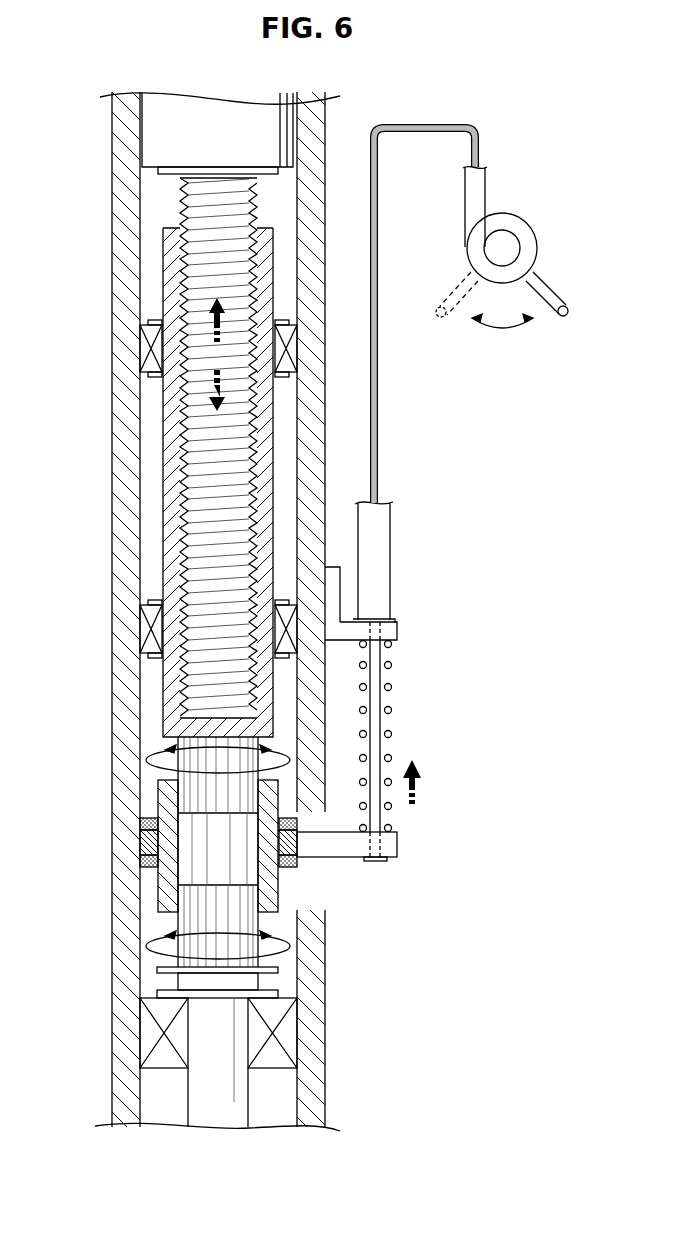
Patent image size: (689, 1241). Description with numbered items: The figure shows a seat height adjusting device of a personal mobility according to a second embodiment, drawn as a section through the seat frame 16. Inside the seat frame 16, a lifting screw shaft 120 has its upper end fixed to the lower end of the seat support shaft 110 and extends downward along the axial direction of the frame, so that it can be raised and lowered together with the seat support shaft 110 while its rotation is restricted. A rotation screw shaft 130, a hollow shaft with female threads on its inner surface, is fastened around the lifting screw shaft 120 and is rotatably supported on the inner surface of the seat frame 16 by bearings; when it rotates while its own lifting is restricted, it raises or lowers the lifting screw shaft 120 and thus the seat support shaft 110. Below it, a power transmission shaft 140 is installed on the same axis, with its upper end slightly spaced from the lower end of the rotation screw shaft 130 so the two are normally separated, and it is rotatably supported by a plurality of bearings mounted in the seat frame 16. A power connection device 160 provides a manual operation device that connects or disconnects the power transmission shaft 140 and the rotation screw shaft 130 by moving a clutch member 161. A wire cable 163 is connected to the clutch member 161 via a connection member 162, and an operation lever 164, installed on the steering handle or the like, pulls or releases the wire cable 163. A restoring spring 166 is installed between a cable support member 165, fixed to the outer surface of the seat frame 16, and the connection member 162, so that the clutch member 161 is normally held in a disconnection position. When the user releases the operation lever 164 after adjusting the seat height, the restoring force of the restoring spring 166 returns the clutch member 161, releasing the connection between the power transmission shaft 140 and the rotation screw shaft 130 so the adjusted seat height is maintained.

The seat frame 16 is at (120, 500).
The seat support shaft 110 is at (168, 142).
The lifting screw shaft 120 is at (210, 273).
The rotation screw shaft 130 is at (172, 420).
The power transmission shaft 140 is at (227, 1092).
The power connection device 160 is at (432, 521).
The clutch member 161 is at (170, 897).
The connection member 162 is at (350, 848).
The wire cable 163 is at (375, 727).
The operation lever 164 is at (515, 225).
The cable support member 165 is at (340, 625).
The restoring spring 166 is at (390, 687).